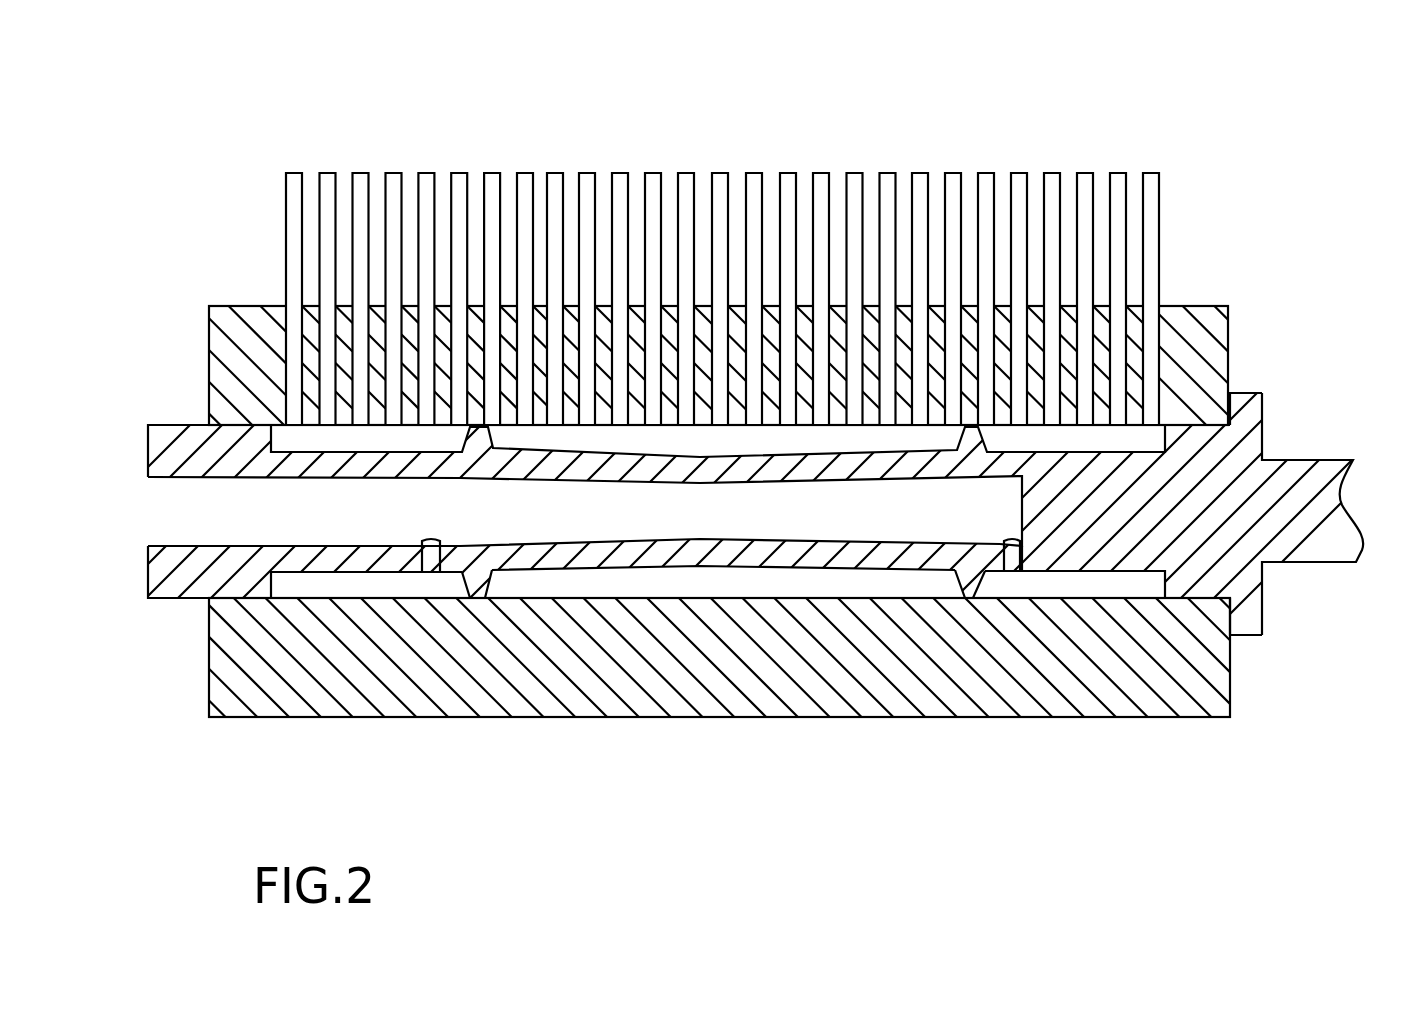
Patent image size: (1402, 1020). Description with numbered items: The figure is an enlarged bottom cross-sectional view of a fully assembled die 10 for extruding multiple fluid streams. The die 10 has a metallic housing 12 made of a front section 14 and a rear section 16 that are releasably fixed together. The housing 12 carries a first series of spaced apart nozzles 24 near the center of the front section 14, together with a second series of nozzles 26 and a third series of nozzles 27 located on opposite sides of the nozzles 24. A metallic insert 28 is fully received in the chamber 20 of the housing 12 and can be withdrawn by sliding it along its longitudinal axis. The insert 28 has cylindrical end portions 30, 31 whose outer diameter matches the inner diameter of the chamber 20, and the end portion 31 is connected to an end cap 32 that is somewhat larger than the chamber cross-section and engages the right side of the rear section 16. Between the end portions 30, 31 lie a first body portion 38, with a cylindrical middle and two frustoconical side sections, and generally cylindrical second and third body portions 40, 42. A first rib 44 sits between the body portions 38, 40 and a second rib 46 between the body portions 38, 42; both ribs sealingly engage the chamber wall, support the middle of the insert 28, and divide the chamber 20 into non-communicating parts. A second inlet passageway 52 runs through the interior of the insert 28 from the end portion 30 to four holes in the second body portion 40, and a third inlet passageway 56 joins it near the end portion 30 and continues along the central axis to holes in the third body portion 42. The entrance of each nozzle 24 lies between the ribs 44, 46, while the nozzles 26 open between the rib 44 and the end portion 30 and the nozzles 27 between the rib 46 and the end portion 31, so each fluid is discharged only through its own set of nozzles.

The die 10 is at (1212, 168).
The housing 12 is at (200, 702).
The front section 14 is at (225, 320).
The rear section 16 is at (232, 672).
The chamber 20 is at (1092, 580).
The nozzles 24 is at (682, 172).
The nozzles 26 is at (358, 172).
The nozzles 27 is at (1150, 172).
The insert 28 is at (176, 418).
The end portion 30 is at (188, 600).
The end portion 31 is at (1210, 420).
The end cap 32 is at (1240, 638).
The first body portion 38 is at (712, 573).
The second body portion 40 is at (382, 573).
The third body portion 42 is at (998, 573).
The first rib 44 is at (483, 598).
The second rib 46 is at (973, 598).
The second inlet passageway 52 is at (198, 524).
The third inlet passageway 56 is at (755, 538).